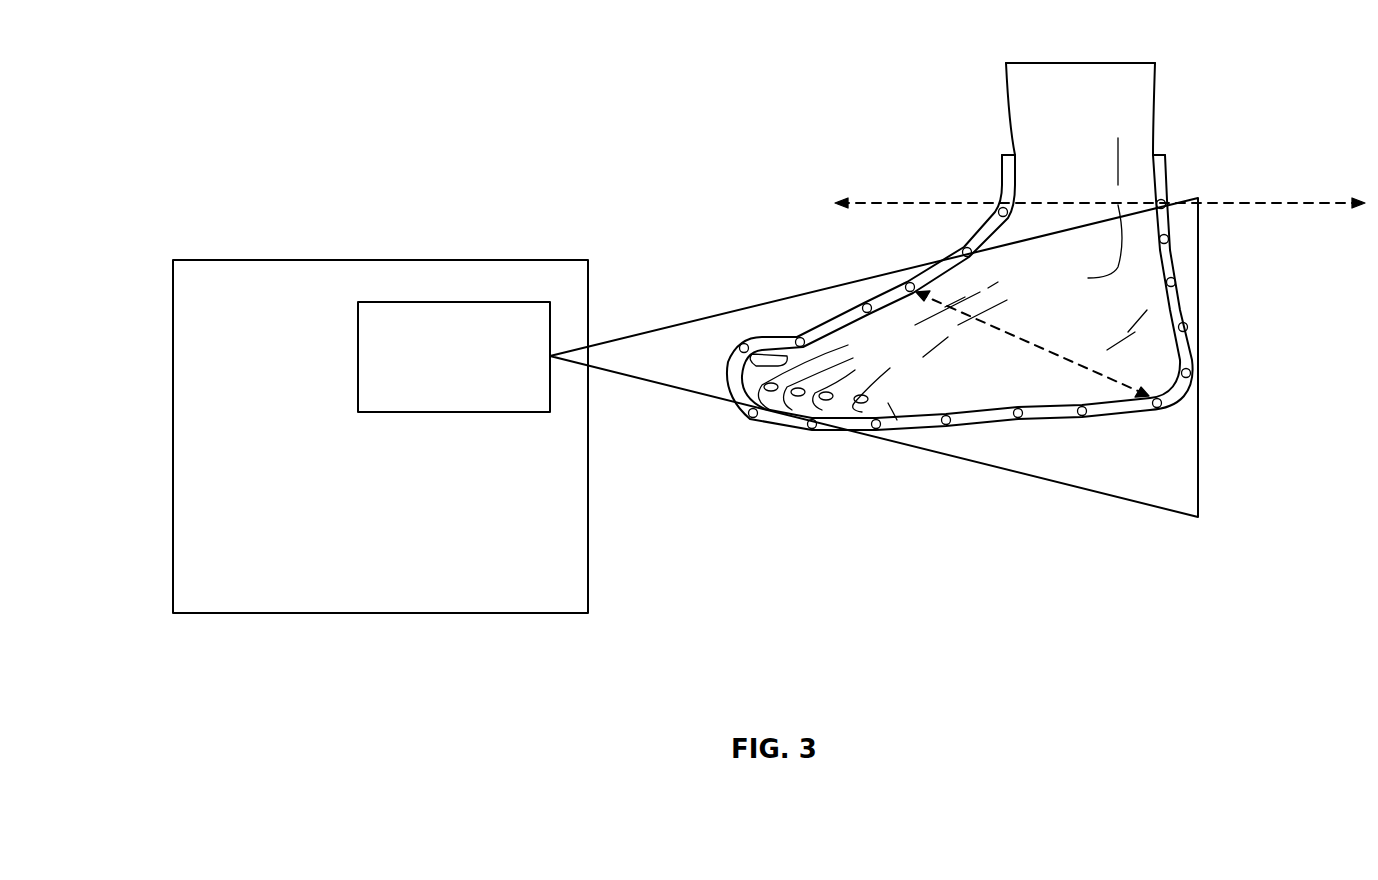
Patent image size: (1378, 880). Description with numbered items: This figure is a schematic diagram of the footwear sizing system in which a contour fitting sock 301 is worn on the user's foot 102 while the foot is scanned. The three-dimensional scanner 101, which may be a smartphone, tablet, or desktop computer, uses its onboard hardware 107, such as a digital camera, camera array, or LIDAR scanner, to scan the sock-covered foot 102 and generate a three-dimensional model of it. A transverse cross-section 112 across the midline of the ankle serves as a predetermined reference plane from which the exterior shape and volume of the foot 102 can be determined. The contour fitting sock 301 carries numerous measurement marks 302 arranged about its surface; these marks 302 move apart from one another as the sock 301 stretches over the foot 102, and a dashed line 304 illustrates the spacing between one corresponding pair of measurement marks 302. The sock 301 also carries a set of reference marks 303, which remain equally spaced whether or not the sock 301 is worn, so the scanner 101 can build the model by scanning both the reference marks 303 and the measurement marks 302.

The 3D scanner 101 is at (372, 613).
The onboard hardware 107 is at (478, 302).
The transverse cross-section 112 is at (879, 199).
The foot 102 is at (1162, 347).
The contour fitting sock 301 is at (877, 484).
The measurement marks 302 is at (744, 345).
The reference marks 303 is at (1019, 420).
The dashed line 304 is at (1018, 340).